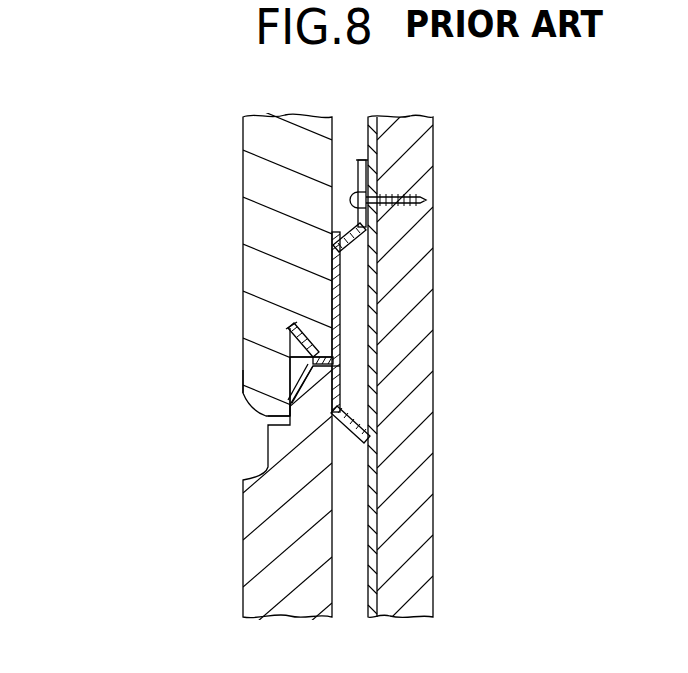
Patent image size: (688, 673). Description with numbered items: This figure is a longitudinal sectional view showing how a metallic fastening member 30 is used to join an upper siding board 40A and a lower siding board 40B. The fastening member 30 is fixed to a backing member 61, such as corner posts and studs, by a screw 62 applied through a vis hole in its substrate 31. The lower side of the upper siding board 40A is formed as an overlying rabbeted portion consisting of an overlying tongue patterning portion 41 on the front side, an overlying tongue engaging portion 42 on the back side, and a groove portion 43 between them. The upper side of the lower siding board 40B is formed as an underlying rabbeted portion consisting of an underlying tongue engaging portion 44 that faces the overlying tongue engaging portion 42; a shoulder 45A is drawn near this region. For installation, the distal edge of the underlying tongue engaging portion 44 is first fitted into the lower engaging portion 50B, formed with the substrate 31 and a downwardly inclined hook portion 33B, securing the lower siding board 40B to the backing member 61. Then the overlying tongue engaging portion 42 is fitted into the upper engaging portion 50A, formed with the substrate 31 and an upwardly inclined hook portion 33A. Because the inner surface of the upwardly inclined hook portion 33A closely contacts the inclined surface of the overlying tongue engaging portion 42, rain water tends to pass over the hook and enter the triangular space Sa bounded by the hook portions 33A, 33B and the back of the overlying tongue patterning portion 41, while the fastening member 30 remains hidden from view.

The upper siding board 40A is at (207, 162).
The lower siding board 40B is at (183, 567).
The overlying tongue patterning portion 41 is at (243, 390).
The overlying tongue engaging portion 42 is at (322, 346).
The groove portion 43 is at (296, 336).
The underlying tongue engaging portion 44 is at (320, 388).
The panel shoulder 45A is at (290, 410).
The metallic fastening member 30 is at (347, 329).
The substrate 31 is at (326, 377).
The upwardly inclined hook portion 33A is at (290, 350).
The downwardly inclined hook portion 33B is at (292, 392).
The upper engaging portion 50A is at (350, 257).
The lower engaging portion 50B is at (345, 413).
The backing member 61 is at (415, 567).
The screw 62 is at (392, 196).
The space Sa is at (290, 362).